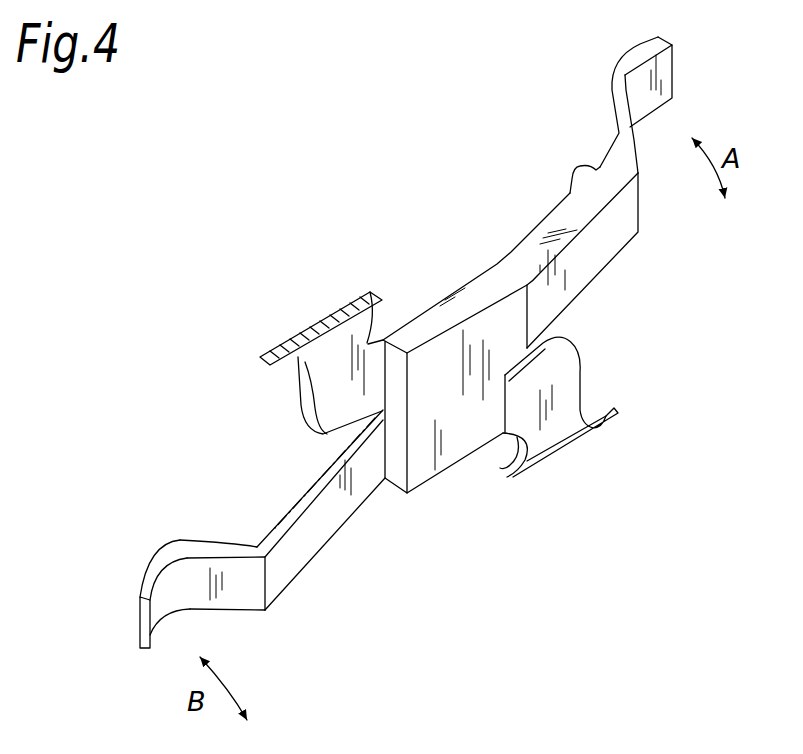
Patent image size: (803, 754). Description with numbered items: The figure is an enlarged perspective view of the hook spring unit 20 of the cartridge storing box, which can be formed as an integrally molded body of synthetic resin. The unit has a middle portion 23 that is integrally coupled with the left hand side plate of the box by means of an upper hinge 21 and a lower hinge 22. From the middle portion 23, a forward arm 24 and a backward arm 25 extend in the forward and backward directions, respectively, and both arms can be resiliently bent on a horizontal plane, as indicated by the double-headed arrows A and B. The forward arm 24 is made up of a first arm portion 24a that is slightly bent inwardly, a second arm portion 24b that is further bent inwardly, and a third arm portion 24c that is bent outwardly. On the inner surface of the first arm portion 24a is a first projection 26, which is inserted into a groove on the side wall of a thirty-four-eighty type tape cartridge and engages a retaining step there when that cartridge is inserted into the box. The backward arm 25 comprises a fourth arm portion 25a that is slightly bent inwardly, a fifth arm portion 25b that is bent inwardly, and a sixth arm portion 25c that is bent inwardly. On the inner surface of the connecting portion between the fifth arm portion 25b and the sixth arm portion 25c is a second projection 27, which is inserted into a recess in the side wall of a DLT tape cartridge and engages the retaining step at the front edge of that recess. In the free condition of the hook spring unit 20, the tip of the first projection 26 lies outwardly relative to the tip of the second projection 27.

The hook spring unit 20 is at (411, 296).
The upper hinge 21 is at (328, 378).
The lower hinge 22 is at (562, 395).
The middle portion 23 is at (463, 333).
The forward arm 24 is at (627, 242).
The first arm portion 24a is at (585, 265).
The second arm portion 24b is at (616, 115).
The third arm portion 24c is at (645, 55).
The backward arm 25 is at (333, 540).
The fourth arm portion 25a is at (290, 517).
The fifth arm portion 25b is at (190, 550).
The sixth arm portion 25c is at (143, 572).
The first projection 26 is at (572, 177).
The second projection 27 is at (162, 543).